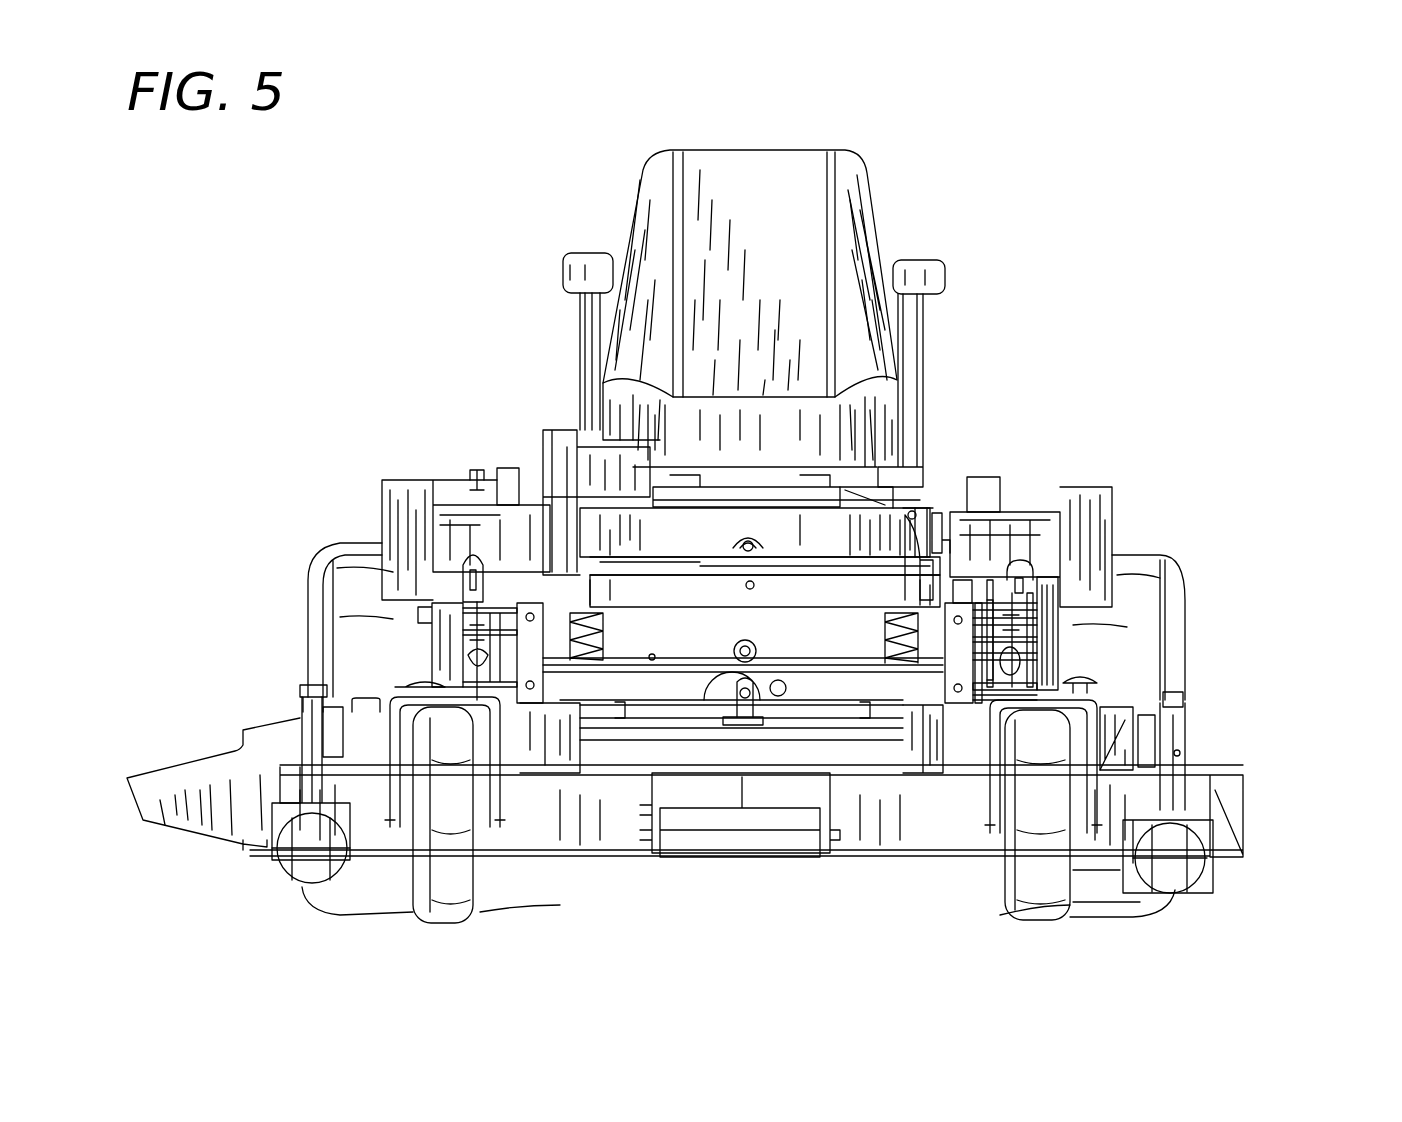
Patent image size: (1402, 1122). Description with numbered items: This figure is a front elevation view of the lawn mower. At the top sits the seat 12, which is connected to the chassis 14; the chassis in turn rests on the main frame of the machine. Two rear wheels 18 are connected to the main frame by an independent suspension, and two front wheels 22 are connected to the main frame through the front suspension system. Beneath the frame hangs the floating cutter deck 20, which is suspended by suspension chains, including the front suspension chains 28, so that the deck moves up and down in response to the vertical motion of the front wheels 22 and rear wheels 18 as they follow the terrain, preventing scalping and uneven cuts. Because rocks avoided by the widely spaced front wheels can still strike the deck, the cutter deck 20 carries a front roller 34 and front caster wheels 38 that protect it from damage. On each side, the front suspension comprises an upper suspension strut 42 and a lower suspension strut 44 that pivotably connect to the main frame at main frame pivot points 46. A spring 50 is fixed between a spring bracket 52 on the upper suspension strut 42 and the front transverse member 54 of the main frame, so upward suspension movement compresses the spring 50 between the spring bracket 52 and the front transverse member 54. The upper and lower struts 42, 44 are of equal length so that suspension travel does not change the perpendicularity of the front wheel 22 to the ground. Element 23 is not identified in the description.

The seat 12 is at (853, 203).
The chassis 14 is at (900, 530).
The rear wheels 18 is at (1127, 587).
The floating cutter deck 20 is at (1223, 800).
The front wheels 22 is at (1027, 872).
The link arm 23 is at (1045, 650).
The front suspension chains 28 is at (1030, 667).
The front roller 34 is at (722, 835).
The front caster wheels 38 is at (1177, 840).
The upper suspension strut 42 is at (990, 613).
The lower suspension strut 44 is at (1023, 690).
The main frame pivot points 46 is at (958, 624).
The spring 50 is at (605, 655).
The spring bracket 52 is at (917, 557).
The front transverse member 54 is at (650, 660).